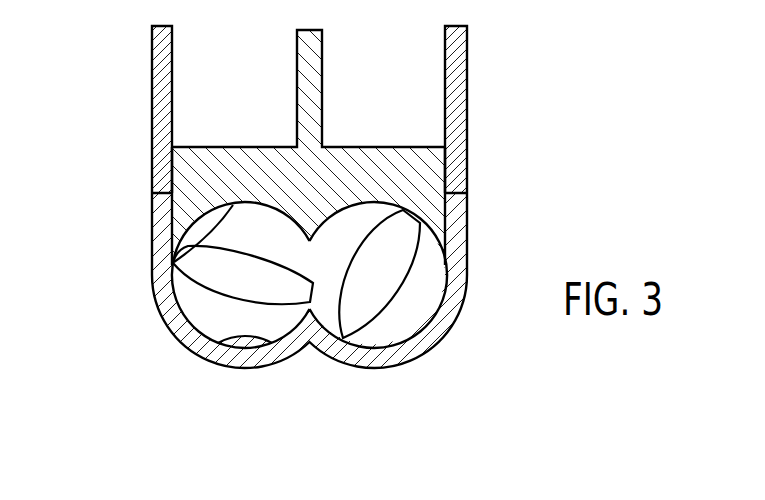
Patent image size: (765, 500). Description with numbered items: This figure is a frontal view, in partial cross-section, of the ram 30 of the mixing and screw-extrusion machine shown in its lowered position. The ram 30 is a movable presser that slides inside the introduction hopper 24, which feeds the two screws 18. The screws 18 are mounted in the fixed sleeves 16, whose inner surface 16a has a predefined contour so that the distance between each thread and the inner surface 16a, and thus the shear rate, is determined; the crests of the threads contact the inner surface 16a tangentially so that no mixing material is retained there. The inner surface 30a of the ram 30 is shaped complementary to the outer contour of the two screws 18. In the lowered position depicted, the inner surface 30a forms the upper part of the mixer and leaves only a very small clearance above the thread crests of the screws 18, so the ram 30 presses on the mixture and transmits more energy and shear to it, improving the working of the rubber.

The fixed sleeves 16 is at (467, 218).
The inner surface of the sleeves 16a is at (268, 352).
The screws 18 is at (397, 292).
The introduction hopper 24 is at (150, 88).
The ram 30 is at (385, 147).
The inner surface of the ram 30a is at (207, 230).